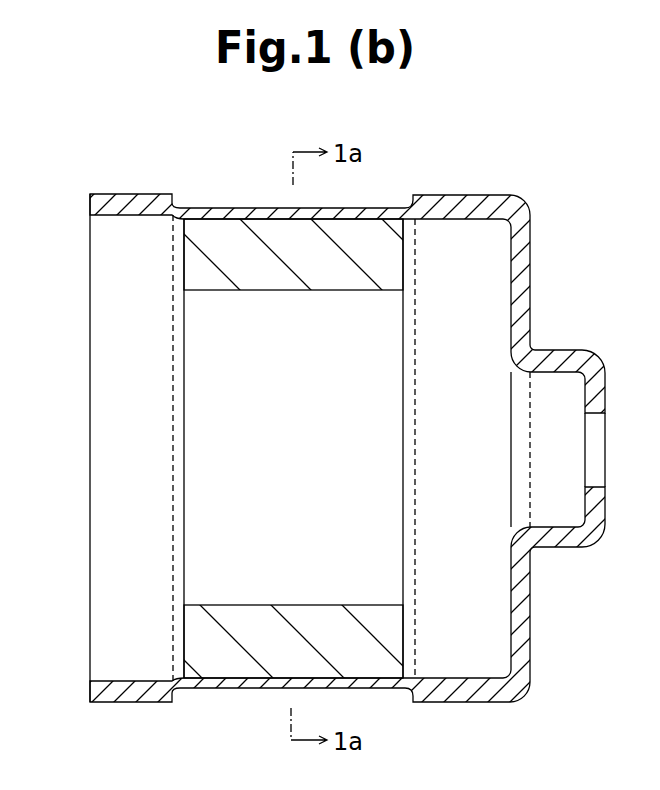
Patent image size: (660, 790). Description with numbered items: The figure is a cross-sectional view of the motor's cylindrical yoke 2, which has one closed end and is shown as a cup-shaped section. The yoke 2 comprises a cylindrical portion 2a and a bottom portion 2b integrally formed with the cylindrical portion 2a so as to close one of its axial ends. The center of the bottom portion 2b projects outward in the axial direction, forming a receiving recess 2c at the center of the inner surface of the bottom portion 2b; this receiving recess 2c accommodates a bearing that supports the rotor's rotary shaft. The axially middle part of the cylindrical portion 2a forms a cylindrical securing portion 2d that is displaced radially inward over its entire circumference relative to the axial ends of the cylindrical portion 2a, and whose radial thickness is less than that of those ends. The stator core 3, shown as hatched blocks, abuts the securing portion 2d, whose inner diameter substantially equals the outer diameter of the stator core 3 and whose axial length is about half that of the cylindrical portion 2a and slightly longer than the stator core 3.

The yoke 2 is at (323, 423).
The cylindrical portion 2a is at (141, 194).
The bottom portion 2b is at (528, 260).
The receiving recess 2c is at (568, 526).
The securing portion 2d is at (218, 208).
The stator core 3 is at (184, 553).